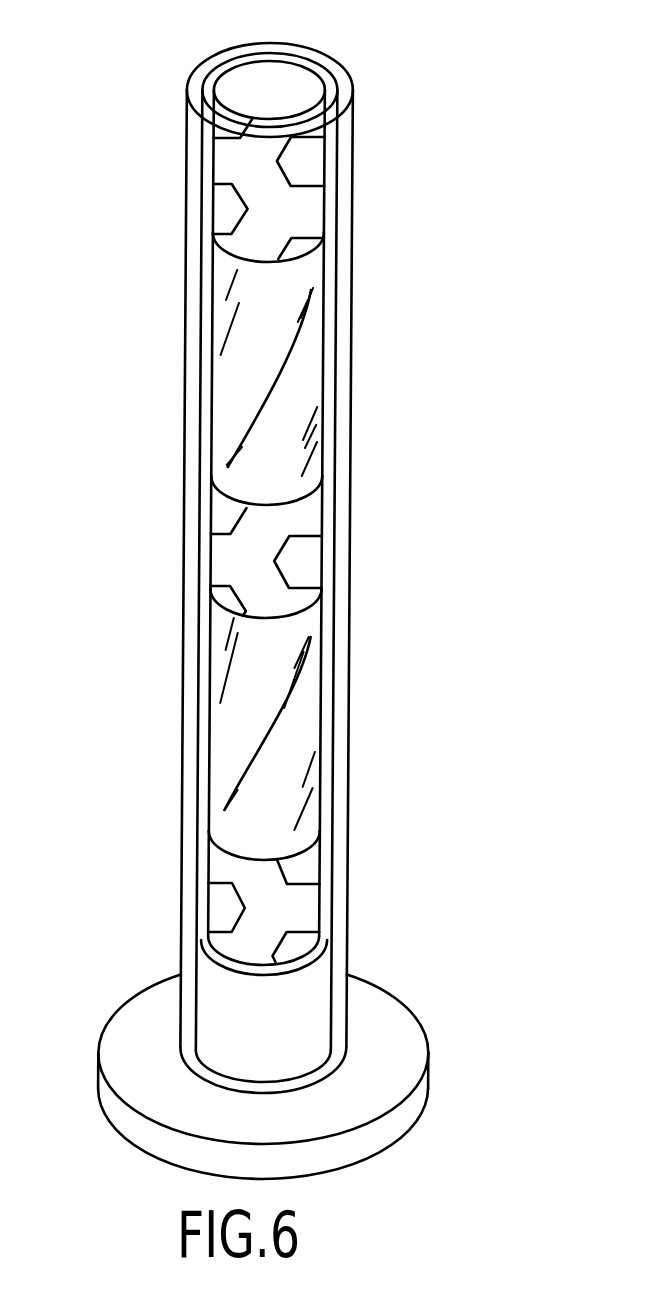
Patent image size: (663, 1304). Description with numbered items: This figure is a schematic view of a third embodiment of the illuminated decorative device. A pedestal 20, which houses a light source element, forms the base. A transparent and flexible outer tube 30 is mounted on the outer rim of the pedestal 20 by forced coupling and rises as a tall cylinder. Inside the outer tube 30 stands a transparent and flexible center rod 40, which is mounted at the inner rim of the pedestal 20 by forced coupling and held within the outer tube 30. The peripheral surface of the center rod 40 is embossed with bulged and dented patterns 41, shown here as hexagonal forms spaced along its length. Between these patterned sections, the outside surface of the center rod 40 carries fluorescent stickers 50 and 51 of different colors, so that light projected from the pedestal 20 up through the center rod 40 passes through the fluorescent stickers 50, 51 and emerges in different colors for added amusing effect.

The pedestal 20 is at (387, 1033).
The outer tube 30 is at (193, 315).
The center rod 40 is at (272, 92).
The bulged and dented patterns 41 is at (307, 170).
The fluorescent sticker 50 is at (308, 722).
The fluorescent sticker 51 is at (303, 378).